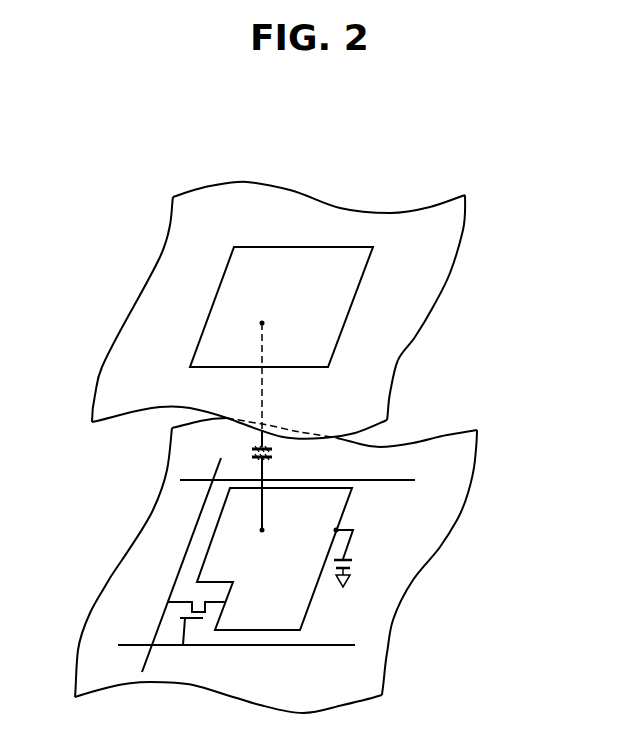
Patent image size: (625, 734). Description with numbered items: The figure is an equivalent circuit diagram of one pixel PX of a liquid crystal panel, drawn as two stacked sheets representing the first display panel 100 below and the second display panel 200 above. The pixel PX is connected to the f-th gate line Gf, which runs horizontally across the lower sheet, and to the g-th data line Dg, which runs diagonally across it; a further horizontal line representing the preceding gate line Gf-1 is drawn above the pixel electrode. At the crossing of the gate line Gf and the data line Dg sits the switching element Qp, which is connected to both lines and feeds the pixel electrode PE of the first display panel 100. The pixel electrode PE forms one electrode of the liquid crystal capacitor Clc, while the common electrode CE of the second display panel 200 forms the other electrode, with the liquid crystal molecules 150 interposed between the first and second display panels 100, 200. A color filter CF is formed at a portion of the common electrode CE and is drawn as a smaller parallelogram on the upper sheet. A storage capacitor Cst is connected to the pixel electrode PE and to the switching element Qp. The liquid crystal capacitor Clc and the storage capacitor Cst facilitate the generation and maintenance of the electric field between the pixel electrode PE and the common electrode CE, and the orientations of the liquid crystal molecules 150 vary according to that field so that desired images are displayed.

The pixel PX is at (445, 147).
The second display panel 200 is at (413, 342).
The color filter CF is at (365, 268).
The common electrode CE is at (393, 383).
The first display panel 100 is at (468, 520).
The liquid crystal molecules 150 is at (145, 457).
The liquid crystal capacitor Clc is at (278, 481).
The storage capacitor Cst is at (358, 558).
The pixel electrode PE is at (313, 595).
The switching element Qp is at (193, 623).
The data line Dg is at (190, 553).
The gate line Gf is at (250, 645).
The previous gate line Gf-1 is at (318, 480).